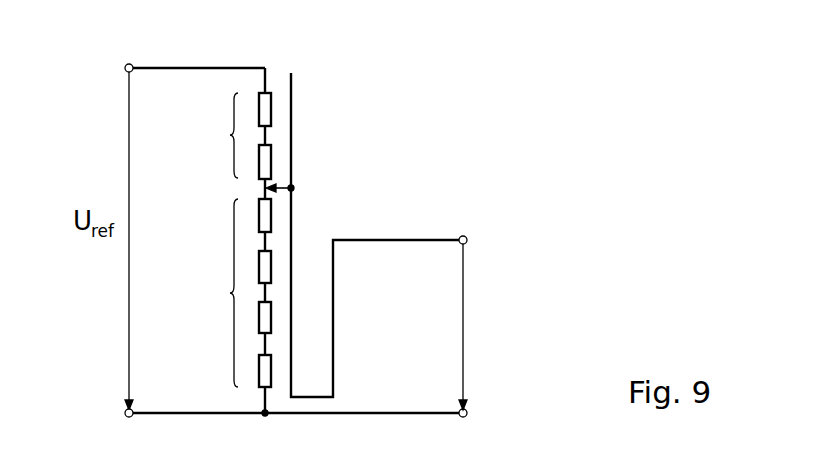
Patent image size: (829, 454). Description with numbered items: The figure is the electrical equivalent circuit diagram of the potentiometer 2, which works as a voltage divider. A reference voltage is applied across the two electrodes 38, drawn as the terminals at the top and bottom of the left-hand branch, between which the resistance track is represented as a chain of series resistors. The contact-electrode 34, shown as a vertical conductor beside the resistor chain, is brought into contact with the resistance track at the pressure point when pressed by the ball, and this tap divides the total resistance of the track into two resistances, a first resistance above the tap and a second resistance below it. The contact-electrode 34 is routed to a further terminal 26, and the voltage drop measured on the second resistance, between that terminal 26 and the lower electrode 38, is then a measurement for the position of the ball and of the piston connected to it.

The potentiometer 2 is at (214, 244).
The contact-electrode 34 is at (292, 137).
The electrodes 38 is at (125, 65).
The measurement voltage terminal 26 is at (465, 236).